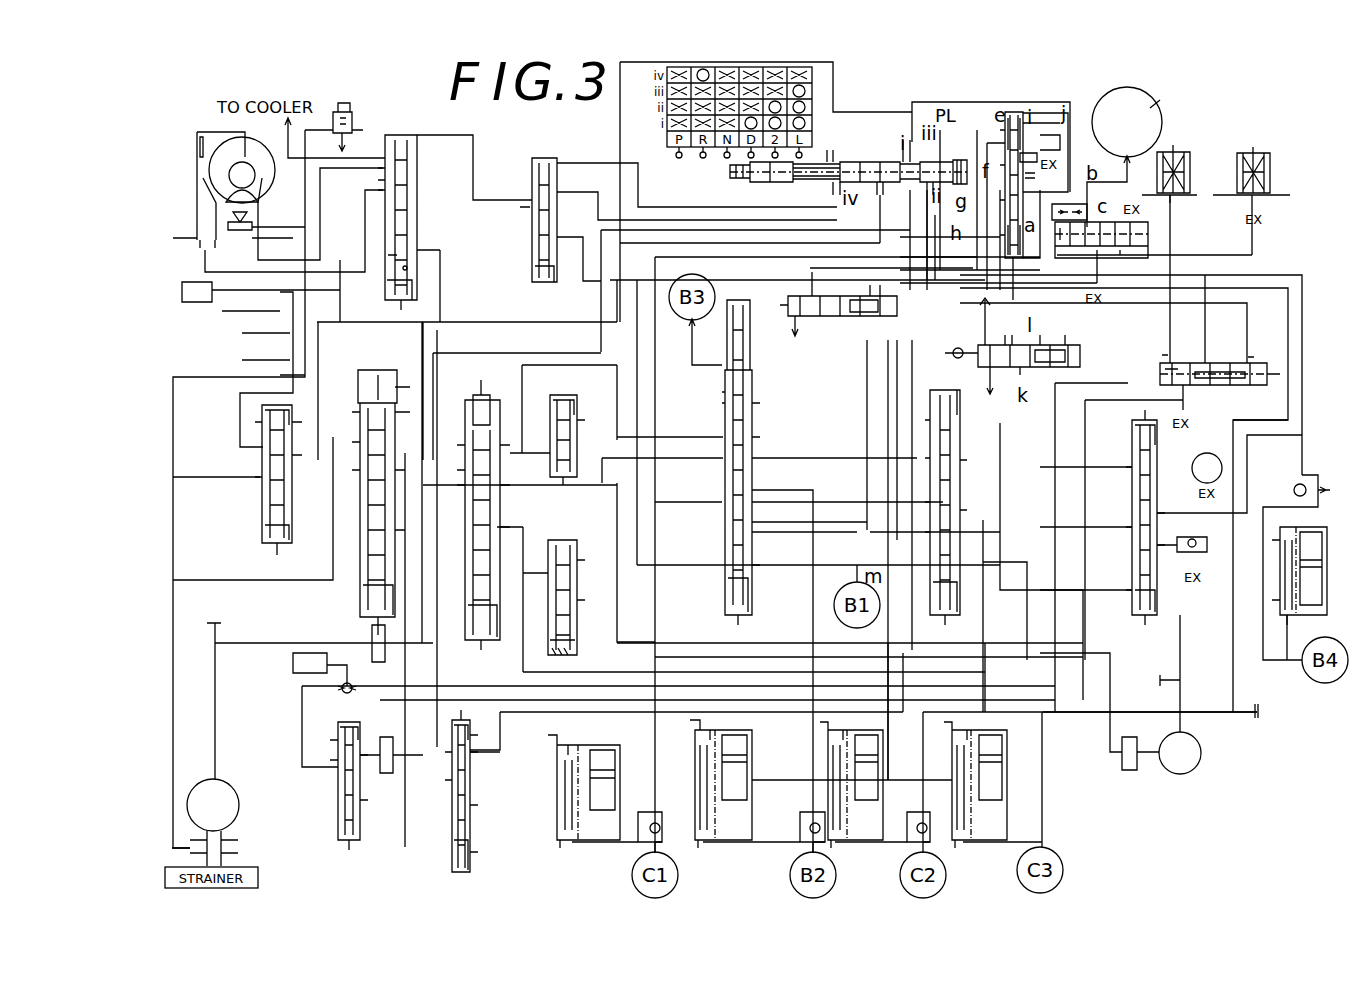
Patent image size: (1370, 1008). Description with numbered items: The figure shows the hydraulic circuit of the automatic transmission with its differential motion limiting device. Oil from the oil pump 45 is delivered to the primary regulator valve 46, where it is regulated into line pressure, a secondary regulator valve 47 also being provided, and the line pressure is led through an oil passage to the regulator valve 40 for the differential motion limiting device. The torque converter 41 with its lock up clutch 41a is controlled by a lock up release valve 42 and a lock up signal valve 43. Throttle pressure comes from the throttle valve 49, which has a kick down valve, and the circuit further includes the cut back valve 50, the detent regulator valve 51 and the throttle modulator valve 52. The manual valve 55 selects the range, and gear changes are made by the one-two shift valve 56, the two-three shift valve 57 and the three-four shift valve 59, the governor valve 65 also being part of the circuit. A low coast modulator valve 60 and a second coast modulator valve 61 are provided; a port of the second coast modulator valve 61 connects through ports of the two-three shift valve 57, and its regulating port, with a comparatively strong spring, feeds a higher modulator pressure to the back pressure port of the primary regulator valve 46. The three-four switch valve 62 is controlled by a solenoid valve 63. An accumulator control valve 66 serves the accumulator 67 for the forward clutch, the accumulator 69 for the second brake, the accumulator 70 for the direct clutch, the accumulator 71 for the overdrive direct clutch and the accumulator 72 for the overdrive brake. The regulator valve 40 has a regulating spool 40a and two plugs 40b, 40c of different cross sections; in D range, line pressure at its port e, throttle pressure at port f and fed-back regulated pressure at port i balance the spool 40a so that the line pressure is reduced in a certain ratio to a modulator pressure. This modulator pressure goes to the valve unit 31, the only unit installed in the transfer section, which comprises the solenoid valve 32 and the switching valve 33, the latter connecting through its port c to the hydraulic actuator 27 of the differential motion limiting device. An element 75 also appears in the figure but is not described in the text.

The hydraulic actuator 27 is at (1150, 97).
The valve unit 31 is at (1171, 127).
The solenoid valve 32 is at (1272, 176).
The switching valve 33 is at (1146, 240).
The regulator valve 40 is at (1018, 116).
The regulating spool 40a is at (1010, 178).
The first plug 40b is at (1025, 195).
The second plug 40c is at (1010, 262).
The torque converter 41 is at (213, 118).
The lock up clutch 41a is at (200, 148).
The lock up release valve 42 is at (416, 126).
The lock up signal valve 43 is at (551, 151).
The oil pump 45 is at (241, 779).
The primary regulator valve 46 is at (395, 361).
The secondary regulator valve 47 is at (260, 511).
The throttle valve 49 is at (496, 412).
The cut back valve 50 is at (579, 400).
The detent regulator valve 51 is at (569, 533).
The throttle modulator valve 52 is at (329, 808).
The manual valve 55 is at (852, 162).
The 1-2 shift valve 56 is at (757, 304).
The 2-3 shift valve 57 is at (970, 497).
The 3-4 shift valve 59 is at (1128, 415).
The low coast modulator valve 60 is at (846, 324).
The second coast modulator valve 61 is at (1076, 339).
The 3-4 switch valve 62 is at (1262, 355).
The solenoid valve 63 is at (1190, 182).
The governor valve 65 is at (1211, 770).
The accumulator control valve 66 is at (479, 809).
The C1 accumulator 67 is at (628, 757).
The B2 accumulator 69 is at (759, 757).
The C2 accumulator 70 is at (872, 847).
The C3 accumulator 71 is at (1006, 758).
The B4 accumulator 72 is at (1333, 536).
The check valve 75 is at (355, 682).